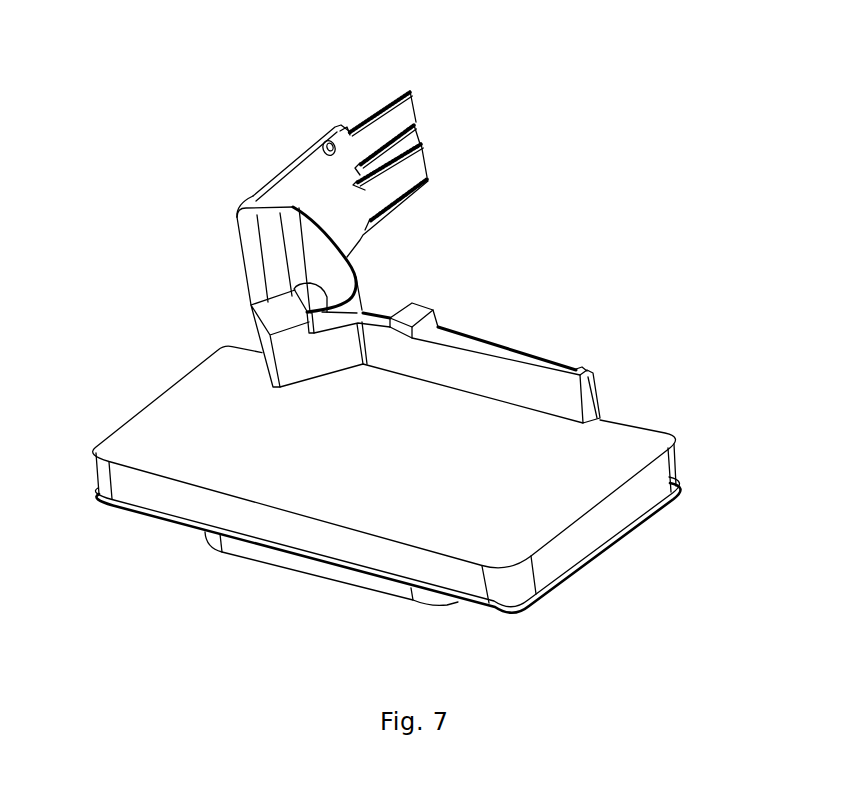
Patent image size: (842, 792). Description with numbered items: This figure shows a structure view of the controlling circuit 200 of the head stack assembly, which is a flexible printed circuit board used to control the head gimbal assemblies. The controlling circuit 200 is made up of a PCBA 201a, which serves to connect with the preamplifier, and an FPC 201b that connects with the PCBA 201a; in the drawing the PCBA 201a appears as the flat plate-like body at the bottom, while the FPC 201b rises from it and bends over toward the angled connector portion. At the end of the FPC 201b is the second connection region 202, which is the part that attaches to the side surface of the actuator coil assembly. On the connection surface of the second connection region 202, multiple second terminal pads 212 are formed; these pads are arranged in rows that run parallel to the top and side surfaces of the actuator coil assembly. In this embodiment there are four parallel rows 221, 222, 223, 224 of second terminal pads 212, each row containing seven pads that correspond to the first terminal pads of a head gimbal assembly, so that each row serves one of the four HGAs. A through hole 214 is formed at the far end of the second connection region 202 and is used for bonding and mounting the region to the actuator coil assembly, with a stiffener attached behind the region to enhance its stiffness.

The controlling circuit 200 is at (68, 35).
The PCBA 201a is at (610, 430).
The FPC 201b is at (330, 275).
The second connection region 202 is at (364, 137).
The through hole 214 is at (326, 139).
The second terminal pads 212 is at (347, 79).
The first row of second terminal pads 221 is at (409, 92).
The second row of second terminal pads 222 is at (415, 126).
The third row of second terminal pads 223 is at (421, 143).
The fourth row of second terminal pads 224 is at (427, 178).